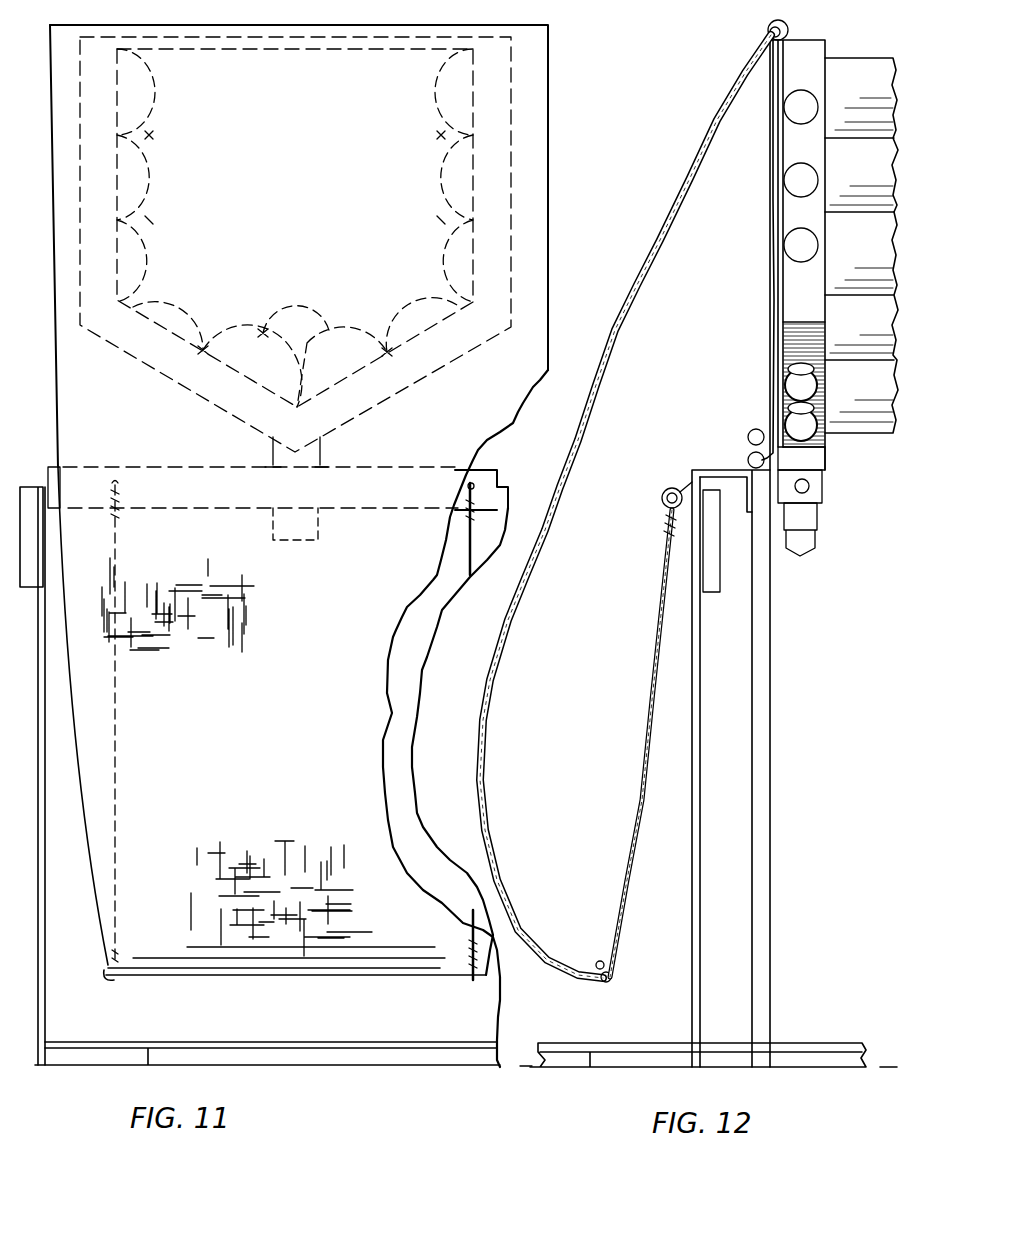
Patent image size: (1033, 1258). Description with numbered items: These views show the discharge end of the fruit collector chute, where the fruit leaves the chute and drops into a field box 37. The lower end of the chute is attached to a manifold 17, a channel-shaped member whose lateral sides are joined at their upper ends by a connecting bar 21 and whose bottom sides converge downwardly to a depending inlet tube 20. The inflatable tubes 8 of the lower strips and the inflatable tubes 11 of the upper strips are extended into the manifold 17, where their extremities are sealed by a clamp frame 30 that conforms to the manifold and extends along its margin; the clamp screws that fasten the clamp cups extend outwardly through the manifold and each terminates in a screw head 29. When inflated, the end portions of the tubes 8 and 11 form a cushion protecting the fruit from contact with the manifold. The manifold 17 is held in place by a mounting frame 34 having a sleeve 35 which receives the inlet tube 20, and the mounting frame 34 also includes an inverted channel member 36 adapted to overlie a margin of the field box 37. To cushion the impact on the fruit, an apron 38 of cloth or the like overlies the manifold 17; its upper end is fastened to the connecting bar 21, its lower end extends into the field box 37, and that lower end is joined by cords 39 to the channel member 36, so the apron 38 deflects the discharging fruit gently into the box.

In FIG. 11, the inflatable tubes 8 is at (323, 318).
In FIG. 12, the inflatable tubes 8 is at (876, 253).
In FIG. 11, the inflatable tubes 11 is at (152, 135).
In FIG. 12, the inflatable tubes 11 is at (873, 89).
In FIG. 11, the manifold 17 is at (386, 403).
In FIG. 11, the inlet tube 20 is at (273, 452).
In FIG. 12, the inlet tube 20 is at (827, 456).
In FIG. 11, the connecting bar 21 is at (236, 48).
In FIG. 12, the screw head 29 is at (795, 244).
In FIG. 12, the clamp frame 30 is at (769, 265).
In FIG. 12, the mounting frame 34 is at (772, 792).
In FIG. 12, the sleeve 35 is at (825, 493).
In FIG. 11, the inverted channel member 36 is at (498, 470).
In FIG. 12, the inverted channel member 36 is at (700, 478).
In FIG. 11, the field box 37 is at (418, 678).
In FIG. 12, the field box 37 is at (692, 925).
In FIG. 11, the apron 38 is at (552, 127).
In FIG. 12, the apron 38 is at (713, 121).
In FIG. 11, the cords 39 is at (118, 698).
In FIG. 12, the cords 39 is at (655, 660).